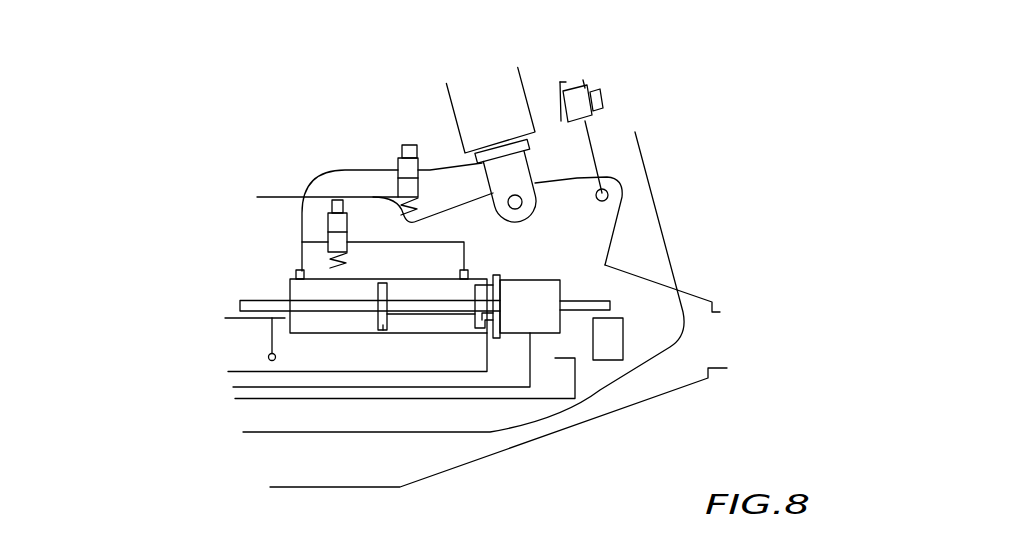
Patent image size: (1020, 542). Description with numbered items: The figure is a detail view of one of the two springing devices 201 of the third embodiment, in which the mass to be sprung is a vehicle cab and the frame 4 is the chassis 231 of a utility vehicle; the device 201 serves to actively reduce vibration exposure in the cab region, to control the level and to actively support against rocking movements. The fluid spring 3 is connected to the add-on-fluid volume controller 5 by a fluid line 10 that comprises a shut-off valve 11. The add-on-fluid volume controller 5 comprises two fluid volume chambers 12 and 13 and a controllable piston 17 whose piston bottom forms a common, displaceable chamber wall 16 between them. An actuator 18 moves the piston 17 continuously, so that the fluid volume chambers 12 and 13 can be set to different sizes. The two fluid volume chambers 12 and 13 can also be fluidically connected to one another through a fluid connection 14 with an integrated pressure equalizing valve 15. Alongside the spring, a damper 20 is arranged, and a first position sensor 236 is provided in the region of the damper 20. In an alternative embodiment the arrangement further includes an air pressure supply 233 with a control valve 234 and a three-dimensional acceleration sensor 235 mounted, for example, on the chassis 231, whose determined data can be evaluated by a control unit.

The fluid spring 3 is at (475, 110).
The frame 4 is at (597, 218).
The add-on-fluid volume controller 5 is at (158, 302).
The fluid line 10 is at (340, 168).
The shut-off valve 11 is at (408, 145).
The fluid volume chamber 12 is at (327, 318).
The fluid volume chamber 13 is at (433, 323).
The fluid connection 14 is at (447, 240).
The pressure equalizing valve 15 is at (340, 223).
The displaceable chamber wall 16 is at (380, 320).
The controllable piston 17 is at (257, 305).
The actuator 18 is at (535, 315).
The damper 20 is at (575, 103).
The alternative device 201 is at (740, 131).
The chassis 231 is at (400, 458).
The air pressure supply 233 is at (257, 338).
The control valve 234 is at (283, 315).
The 3D acceleration sensor 235 is at (615, 338).
The first position sensor 236 is at (605, 102).